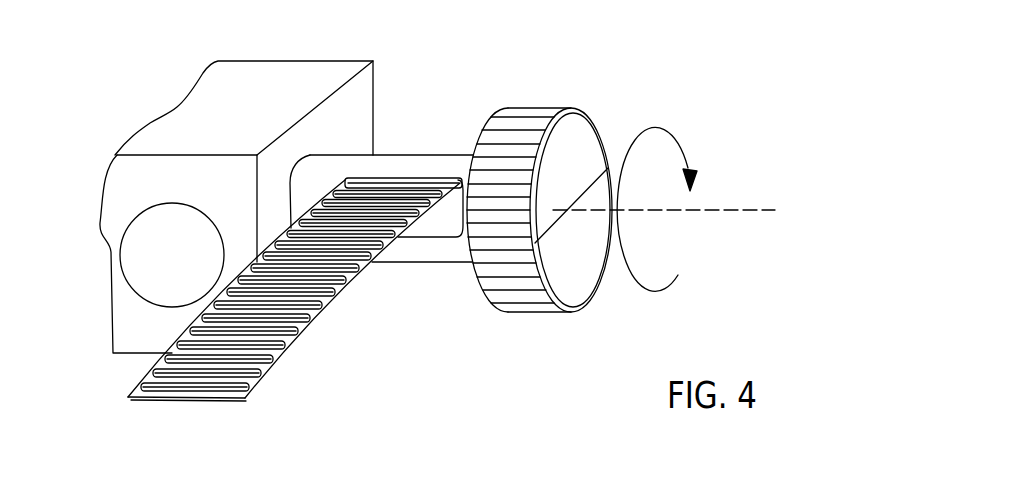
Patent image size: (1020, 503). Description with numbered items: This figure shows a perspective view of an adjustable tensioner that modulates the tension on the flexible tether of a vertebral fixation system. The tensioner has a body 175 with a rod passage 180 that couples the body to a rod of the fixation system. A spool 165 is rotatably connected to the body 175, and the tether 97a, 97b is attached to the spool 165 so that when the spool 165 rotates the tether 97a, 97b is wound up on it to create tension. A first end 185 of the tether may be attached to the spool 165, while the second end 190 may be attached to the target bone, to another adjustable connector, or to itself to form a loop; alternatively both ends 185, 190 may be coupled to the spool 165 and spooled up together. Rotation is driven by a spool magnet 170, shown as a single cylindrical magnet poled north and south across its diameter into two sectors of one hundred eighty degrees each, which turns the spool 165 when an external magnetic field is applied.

The body 175 is at (373, 88).
The rod passage 180 is at (166, 259).
The first end of the tether 185 is at (395, 181).
The second end of the tether 190 is at (215, 385).
The tether 97a is at (307, 330).
The tether 97b is at (314, 306).
The spool magnet 170 is at (587, 113).
The spool 165 is at (781, 133).